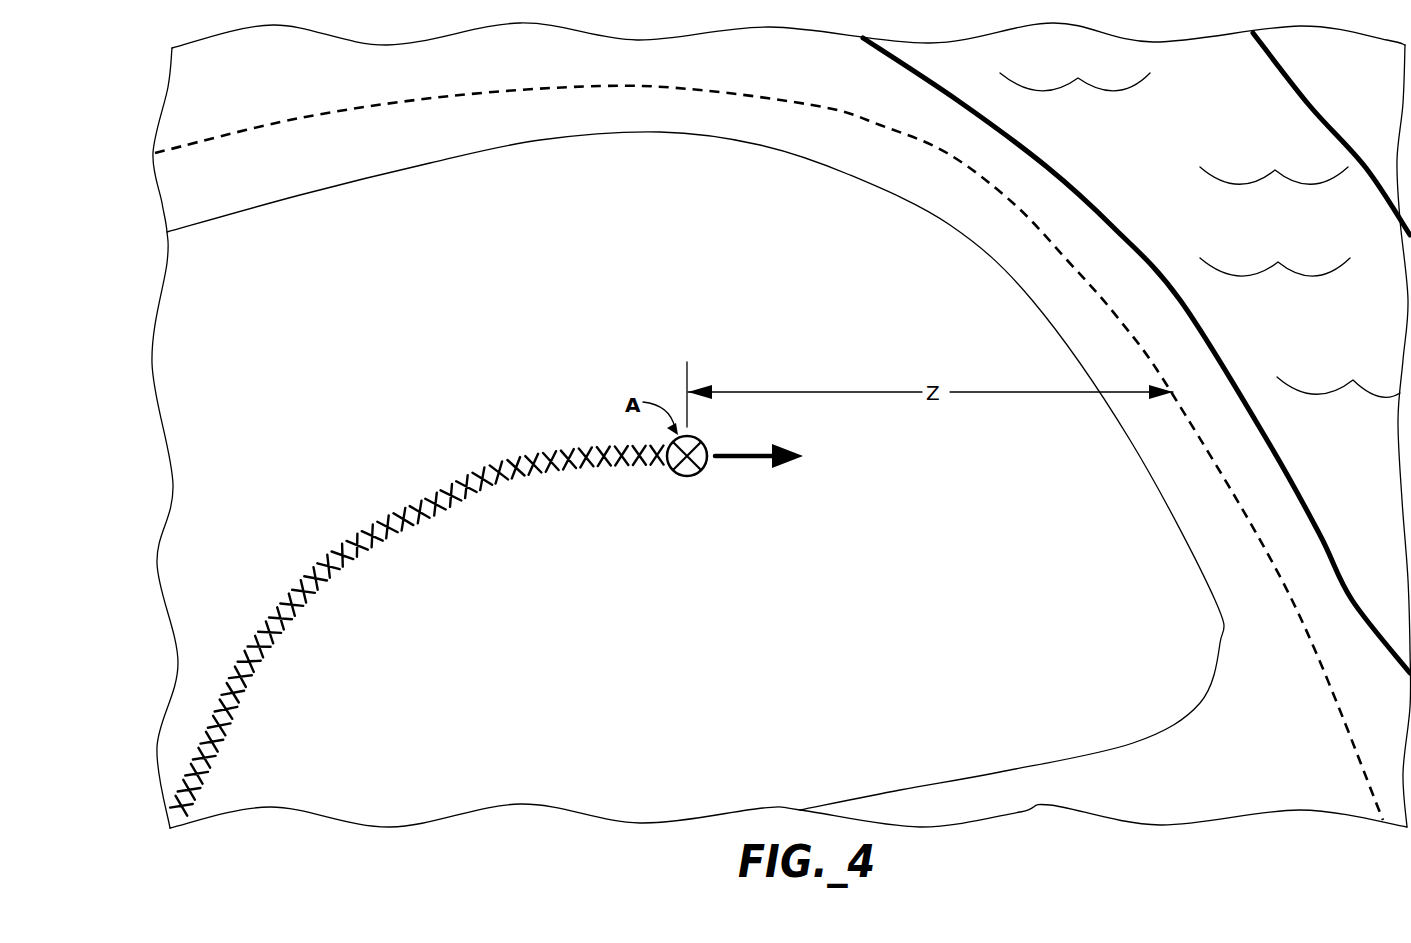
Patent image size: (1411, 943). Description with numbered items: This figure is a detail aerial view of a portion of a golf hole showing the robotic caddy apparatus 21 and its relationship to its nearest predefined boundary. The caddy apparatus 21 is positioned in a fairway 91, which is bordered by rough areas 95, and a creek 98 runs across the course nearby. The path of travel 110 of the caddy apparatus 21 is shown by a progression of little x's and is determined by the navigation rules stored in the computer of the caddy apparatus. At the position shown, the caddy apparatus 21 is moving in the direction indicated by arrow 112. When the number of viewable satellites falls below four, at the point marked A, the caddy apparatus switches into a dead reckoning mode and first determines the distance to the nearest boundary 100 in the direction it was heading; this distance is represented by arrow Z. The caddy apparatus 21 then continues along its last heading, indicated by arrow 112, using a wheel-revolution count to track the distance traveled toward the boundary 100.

The rough areas 95 is at (241, 90).
The fairway 91 is at (541, 288).
The creek 98 is at (960, 63).
The boundary 100 is at (1320, 662).
The path of travel 110 is at (363, 508).
The caddy apparatus 21 is at (687, 478).
The arrow 112 is at (742, 460).